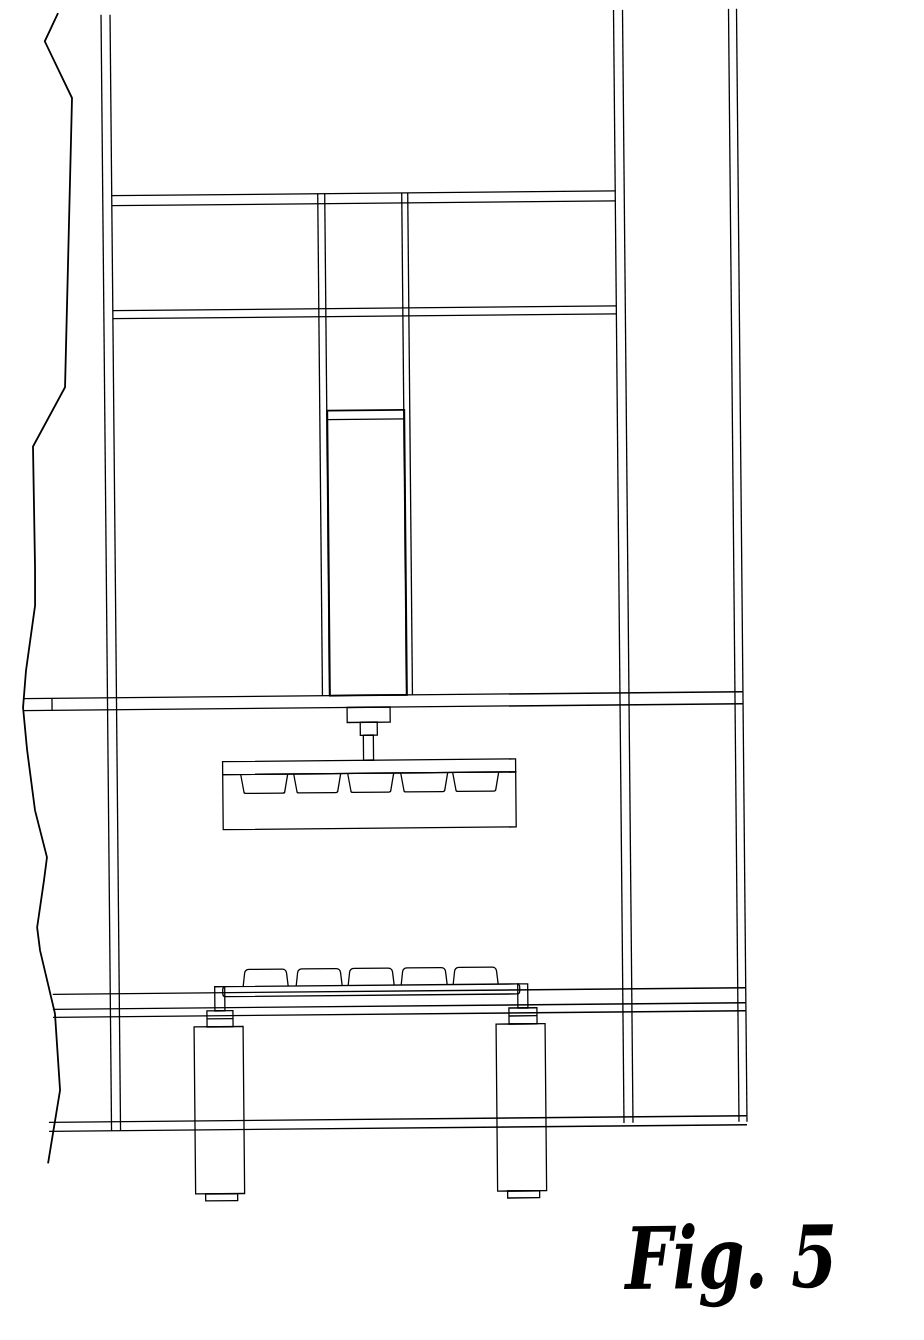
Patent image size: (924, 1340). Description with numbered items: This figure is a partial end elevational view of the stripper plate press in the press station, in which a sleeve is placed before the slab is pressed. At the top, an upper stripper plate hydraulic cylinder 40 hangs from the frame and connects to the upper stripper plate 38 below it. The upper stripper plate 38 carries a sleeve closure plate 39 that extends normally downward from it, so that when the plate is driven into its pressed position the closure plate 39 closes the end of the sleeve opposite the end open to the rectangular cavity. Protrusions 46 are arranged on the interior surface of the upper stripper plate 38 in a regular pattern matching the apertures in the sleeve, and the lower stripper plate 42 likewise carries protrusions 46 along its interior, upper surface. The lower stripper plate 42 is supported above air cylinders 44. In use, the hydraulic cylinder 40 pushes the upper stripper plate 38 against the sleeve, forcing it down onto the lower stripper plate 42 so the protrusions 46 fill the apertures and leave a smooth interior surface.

The upper stripper plate 38 is at (505, 758).
The sleeve closure plate 39 is at (516, 808).
The upper stripper plate hydraulic cylinder 40 is at (413, 575).
The lower stripper plate 42 is at (397, 996).
The air cylinders 44 is at (240, 1170).
The protrusions 46 is at (474, 968).